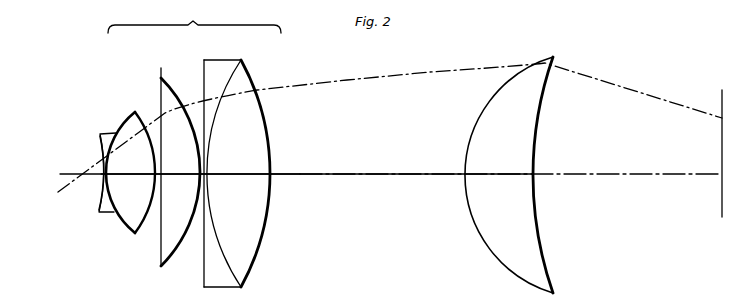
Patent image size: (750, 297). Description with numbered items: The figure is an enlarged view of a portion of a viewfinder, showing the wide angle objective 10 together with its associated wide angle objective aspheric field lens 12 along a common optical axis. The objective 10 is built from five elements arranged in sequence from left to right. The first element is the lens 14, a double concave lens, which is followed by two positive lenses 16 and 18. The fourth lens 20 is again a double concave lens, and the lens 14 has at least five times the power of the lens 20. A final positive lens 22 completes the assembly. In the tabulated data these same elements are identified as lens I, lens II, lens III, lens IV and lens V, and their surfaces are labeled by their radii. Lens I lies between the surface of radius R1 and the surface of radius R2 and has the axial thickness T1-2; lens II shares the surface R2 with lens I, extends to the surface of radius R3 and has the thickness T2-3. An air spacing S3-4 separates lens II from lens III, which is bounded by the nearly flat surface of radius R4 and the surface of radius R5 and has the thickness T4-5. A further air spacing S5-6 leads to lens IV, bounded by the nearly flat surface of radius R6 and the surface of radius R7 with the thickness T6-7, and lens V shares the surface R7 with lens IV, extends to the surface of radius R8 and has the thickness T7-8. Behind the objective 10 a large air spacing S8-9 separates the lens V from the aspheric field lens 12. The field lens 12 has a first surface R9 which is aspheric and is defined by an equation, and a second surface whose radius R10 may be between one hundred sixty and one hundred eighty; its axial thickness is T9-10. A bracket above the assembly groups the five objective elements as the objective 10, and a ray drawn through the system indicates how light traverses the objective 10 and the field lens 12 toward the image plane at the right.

The wide angle objective 10 is at (194, 16).
The wide angle objective aspheric field lens 12 is at (508, 169).
The lens 14 is at (89, 179).
The positive lens 16 is at (125, 166).
The positive lens 18 is at (161, 172).
The fourth lens 20 is at (232, 178).
The final positive lens 22 is at (272, 173).
The lens I is at (89, 165).
The lens II is at (125, 165).
The lens III is at (161, 163).
The lens IV is at (232, 166).
The lens V is at (272, 161).
The radius R1 is at (100, 167).
The radius R2 is at (110, 190).
The radius R3 is at (140, 117).
The radius R4 is at (160, 248).
The radius R5 is at (173, 94).
The radius R6 is at (203, 266).
The radius R7 is at (238, 268).
The radius R8 is at (268, 242).
The first surface R9 is at (476, 225).
The second surface radius R10 is at (539, 218).
The thickness T1-2 is at (102, 182).
The thickness T2-3 is at (135, 170).
The thickness T4-5 is at (177, 169).
The thickness T6-7 is at (220, 160).
The thickness T7-8 is at (246, 168).
The thickness T9-10 is at (501, 173).
The spacing S3-4 is at (158, 180).
The spacing S5-6 is at (209, 178).
The spacing S8-9 is at (380, 173).